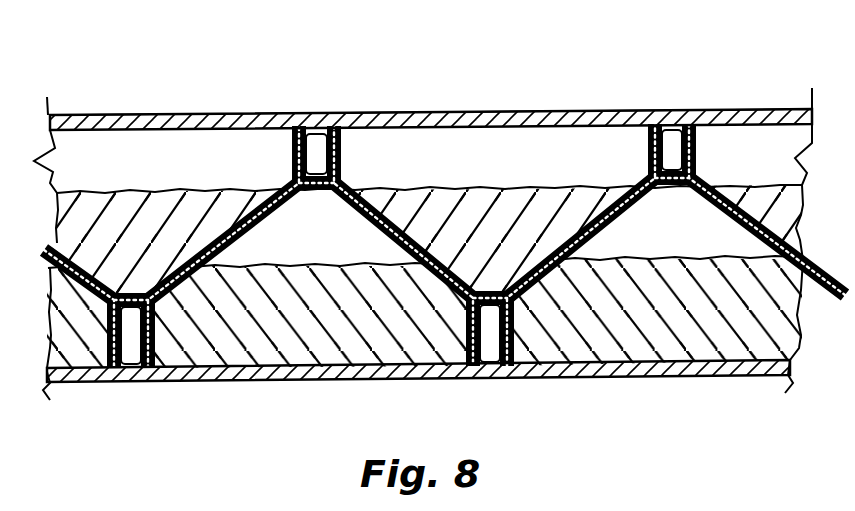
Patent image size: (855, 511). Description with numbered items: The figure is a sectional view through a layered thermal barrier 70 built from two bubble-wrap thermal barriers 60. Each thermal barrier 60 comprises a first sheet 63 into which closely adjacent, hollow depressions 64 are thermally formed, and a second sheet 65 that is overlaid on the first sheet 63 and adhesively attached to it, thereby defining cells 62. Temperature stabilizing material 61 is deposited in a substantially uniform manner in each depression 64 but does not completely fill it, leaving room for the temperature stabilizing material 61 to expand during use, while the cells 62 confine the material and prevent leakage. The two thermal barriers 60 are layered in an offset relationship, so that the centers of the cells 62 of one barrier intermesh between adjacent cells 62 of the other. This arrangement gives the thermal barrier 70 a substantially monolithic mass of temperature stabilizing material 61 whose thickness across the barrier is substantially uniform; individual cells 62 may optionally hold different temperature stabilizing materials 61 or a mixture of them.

The thermal barrier 60 is at (545, 112).
The temperature stabilizing material 61 is at (788, 217).
The cell 62 is at (185, 130).
The first sheet 63 is at (163, 382).
The hollow depression 64 is at (50, 247).
The second sheet 65 is at (108, 115).
The thermal barrier 70 is at (427, 250).